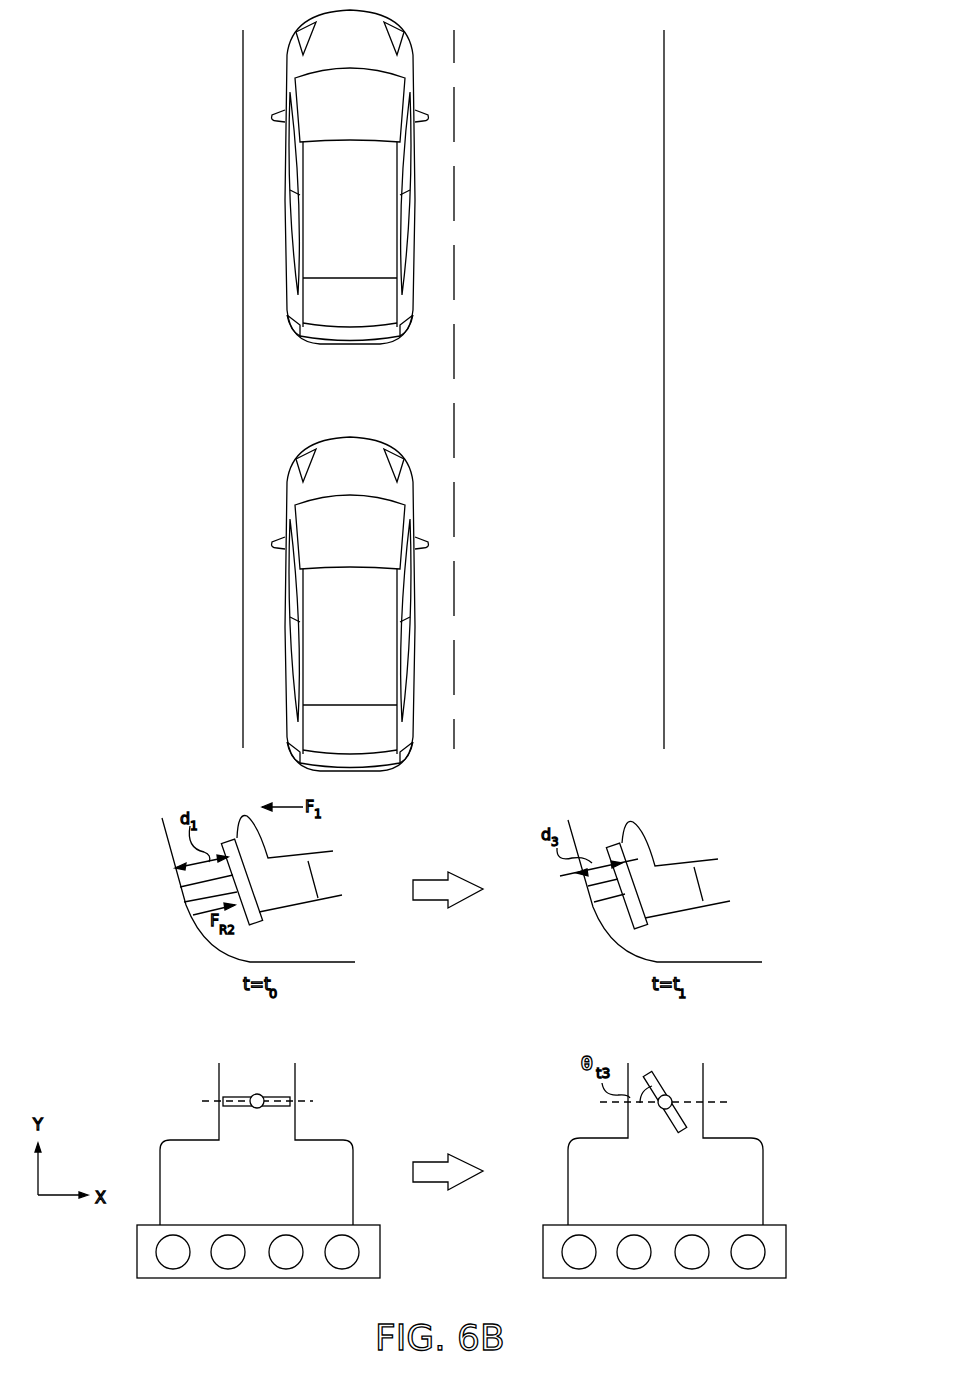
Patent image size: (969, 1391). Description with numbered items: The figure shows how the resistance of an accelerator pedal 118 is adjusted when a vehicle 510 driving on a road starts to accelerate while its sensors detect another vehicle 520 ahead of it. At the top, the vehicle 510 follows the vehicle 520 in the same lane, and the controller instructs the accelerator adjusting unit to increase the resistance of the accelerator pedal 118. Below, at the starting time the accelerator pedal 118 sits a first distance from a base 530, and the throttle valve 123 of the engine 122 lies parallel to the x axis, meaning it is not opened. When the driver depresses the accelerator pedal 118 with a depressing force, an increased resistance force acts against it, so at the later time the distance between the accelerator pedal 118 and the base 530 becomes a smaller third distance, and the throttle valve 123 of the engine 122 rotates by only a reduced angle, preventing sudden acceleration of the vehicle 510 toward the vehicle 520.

The vehicle 520 is at (285, 157).
The vehicle 510 is at (322, 440).
The base 530 is at (182, 910).
The accelerator pedal 118 is at (240, 838).
The engine 122 is at (188, 1140).
The throttle valve 123 is at (277, 1095).